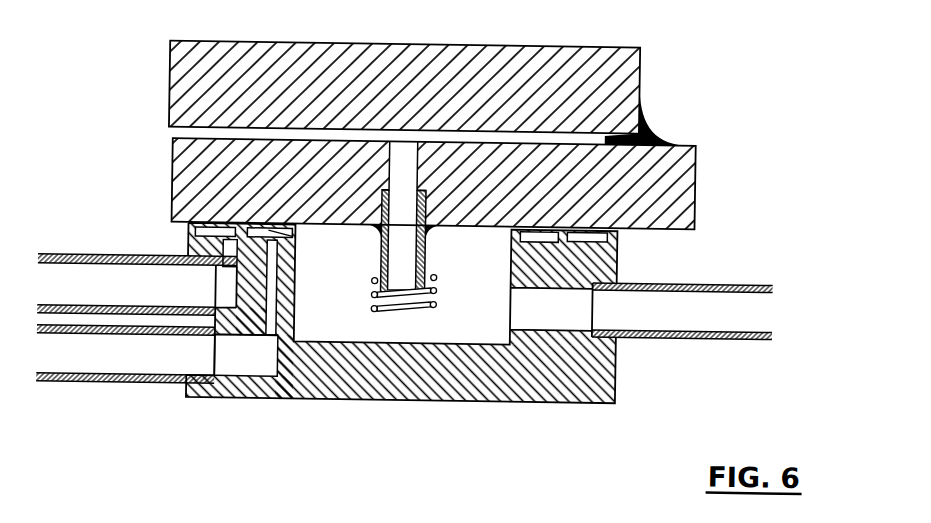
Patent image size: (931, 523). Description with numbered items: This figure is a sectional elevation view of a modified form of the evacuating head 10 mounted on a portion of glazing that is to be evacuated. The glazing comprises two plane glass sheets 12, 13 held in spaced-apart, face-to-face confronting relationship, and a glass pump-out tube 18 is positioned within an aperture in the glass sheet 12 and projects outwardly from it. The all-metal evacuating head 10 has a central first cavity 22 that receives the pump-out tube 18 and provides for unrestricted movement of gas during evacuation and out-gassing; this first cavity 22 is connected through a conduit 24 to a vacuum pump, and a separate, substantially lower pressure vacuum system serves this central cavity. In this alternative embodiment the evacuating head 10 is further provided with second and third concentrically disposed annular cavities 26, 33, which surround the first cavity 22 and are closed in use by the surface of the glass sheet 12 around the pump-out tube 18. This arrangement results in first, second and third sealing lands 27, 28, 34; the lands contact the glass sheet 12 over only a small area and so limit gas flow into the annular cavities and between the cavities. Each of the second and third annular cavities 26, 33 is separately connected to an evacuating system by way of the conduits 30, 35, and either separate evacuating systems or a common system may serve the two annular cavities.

The evacuating head 10 is at (594, 415).
The glass sheet 12 is at (709, 194).
The glass sheet 13 is at (649, 80).
The pump-out tube 18 is at (425, 256).
The first cavity 22 is at (417, 323).
The conduit 24 is at (723, 338).
The second annular cavity 26 is at (290, 232).
The first annular land 27 is at (511, 229).
The second annular land 28 is at (565, 227).
The conduit 30 is at (99, 388).
The third annular cavity 33 is at (222, 236).
The third sealing land 34 is at (194, 229).
The conduit 35 is at (57, 259).